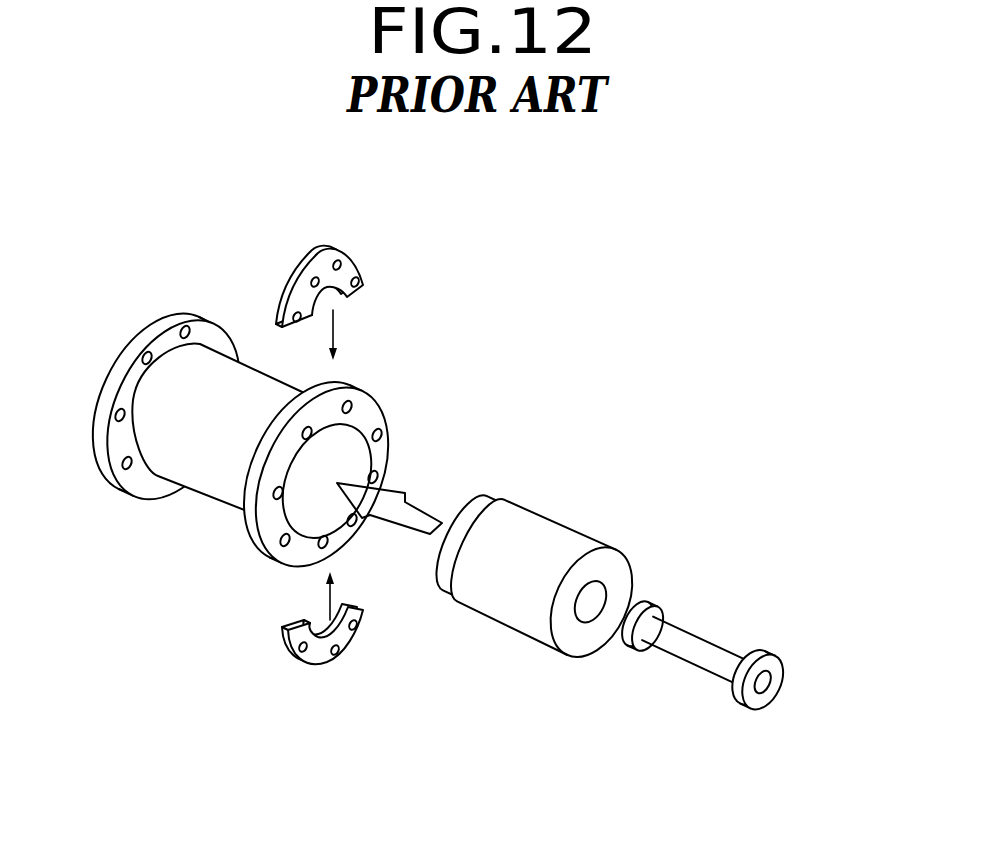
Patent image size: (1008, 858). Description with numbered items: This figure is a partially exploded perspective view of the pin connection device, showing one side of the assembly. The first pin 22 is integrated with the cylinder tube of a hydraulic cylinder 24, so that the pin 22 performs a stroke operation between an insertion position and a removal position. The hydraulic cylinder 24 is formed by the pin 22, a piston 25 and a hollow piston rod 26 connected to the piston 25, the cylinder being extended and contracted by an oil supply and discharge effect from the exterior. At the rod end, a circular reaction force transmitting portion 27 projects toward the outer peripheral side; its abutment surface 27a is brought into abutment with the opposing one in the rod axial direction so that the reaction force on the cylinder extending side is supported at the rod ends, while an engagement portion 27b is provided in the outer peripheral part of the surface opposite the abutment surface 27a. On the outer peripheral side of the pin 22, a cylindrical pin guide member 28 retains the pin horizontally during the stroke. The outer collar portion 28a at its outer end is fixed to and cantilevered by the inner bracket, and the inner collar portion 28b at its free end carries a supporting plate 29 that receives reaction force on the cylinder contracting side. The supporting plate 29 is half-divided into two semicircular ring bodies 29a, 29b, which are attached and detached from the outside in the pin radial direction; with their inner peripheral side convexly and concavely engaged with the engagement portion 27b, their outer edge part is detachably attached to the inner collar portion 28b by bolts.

The first pin 22 is at (535, 602).
The hydraulic cylinder 24 is at (614, 664).
The piston 25 is at (651, 604).
The hollow piston rod 26 is at (705, 641).
The reaction force transmitting portion 27 is at (795, 677).
The abutment surface 27a is at (773, 686).
The engagement portion 27b is at (758, 651).
The pin guide member 28 is at (193, 493).
The outer collar portion 28a is at (172, 308).
The inner collar portion 28b is at (373, 393).
The supporting plate 29 is at (348, 463).
The ring body 29a is at (358, 267).
The ring body 29b is at (322, 671).